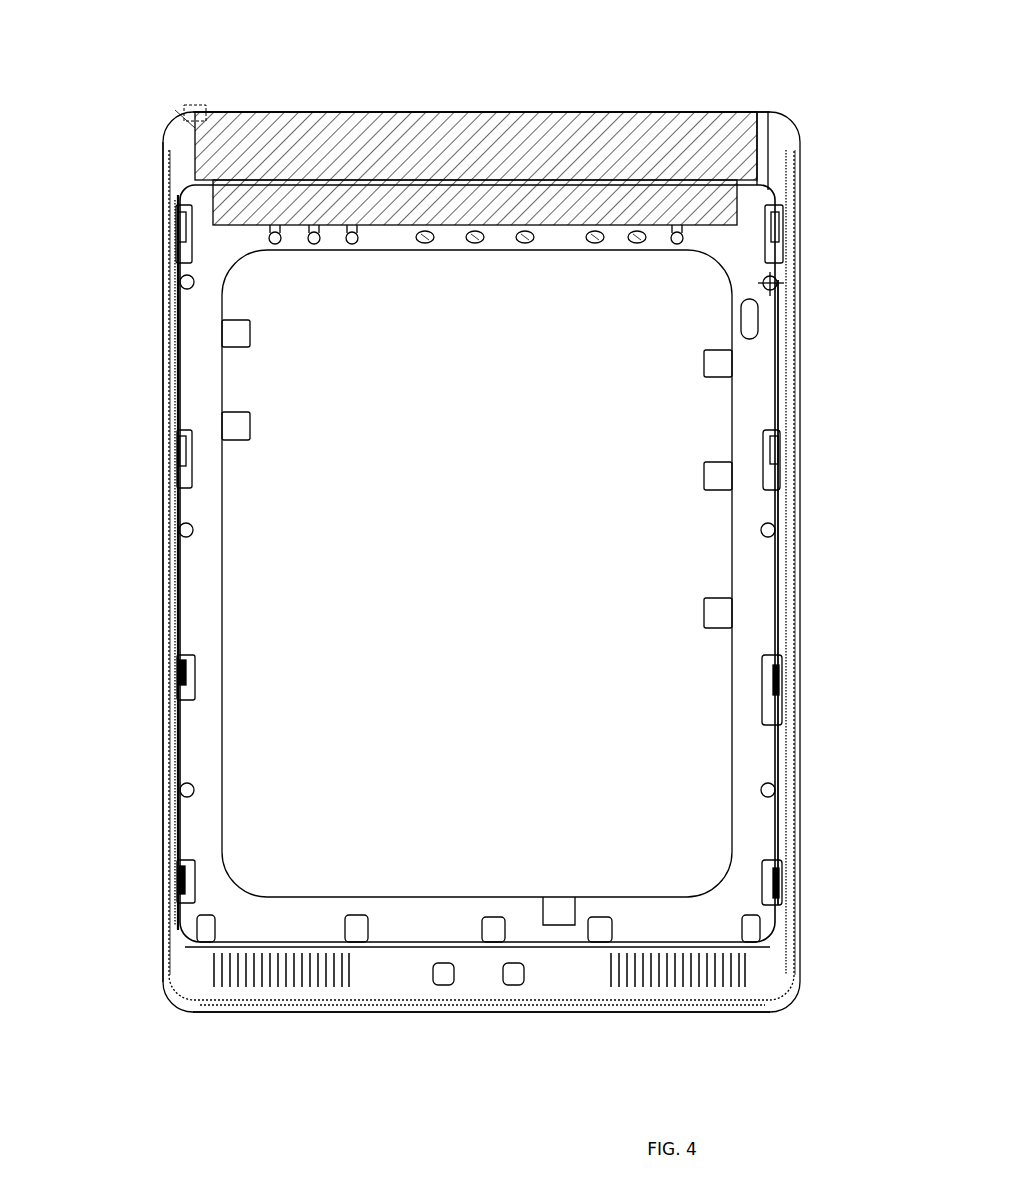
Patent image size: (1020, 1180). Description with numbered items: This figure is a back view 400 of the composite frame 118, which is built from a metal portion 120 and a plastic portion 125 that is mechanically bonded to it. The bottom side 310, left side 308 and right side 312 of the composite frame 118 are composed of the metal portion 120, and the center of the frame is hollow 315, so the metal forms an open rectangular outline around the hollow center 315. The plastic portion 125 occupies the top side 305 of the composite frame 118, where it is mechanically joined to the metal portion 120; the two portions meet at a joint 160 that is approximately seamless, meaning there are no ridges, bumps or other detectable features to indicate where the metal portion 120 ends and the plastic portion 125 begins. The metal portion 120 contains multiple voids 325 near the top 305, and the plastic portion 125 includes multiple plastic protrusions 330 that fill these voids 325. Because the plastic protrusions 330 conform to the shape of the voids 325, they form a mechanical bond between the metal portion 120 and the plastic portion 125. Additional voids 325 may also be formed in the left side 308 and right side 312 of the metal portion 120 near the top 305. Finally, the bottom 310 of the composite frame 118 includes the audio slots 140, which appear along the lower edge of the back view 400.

The composite frame 118 is at (740, 97).
The metal portion 120 is at (725, 688).
The plastic portion 125 is at (288, 112).
The audio slots 140 is at (688, 972).
The joint 160 is at (190, 106).
The top side 305 is at (481, 87).
The left side 308 is at (838, 562).
The bottom side 310 is at (481, 1016).
The right side 312 is at (115, 562).
The hollow center 315 is at (477, 573).
The voids 325 is at (480, 244).
The plastic protrusions 330 is at (355, 244).
The back view 400 is at (461, 1117).